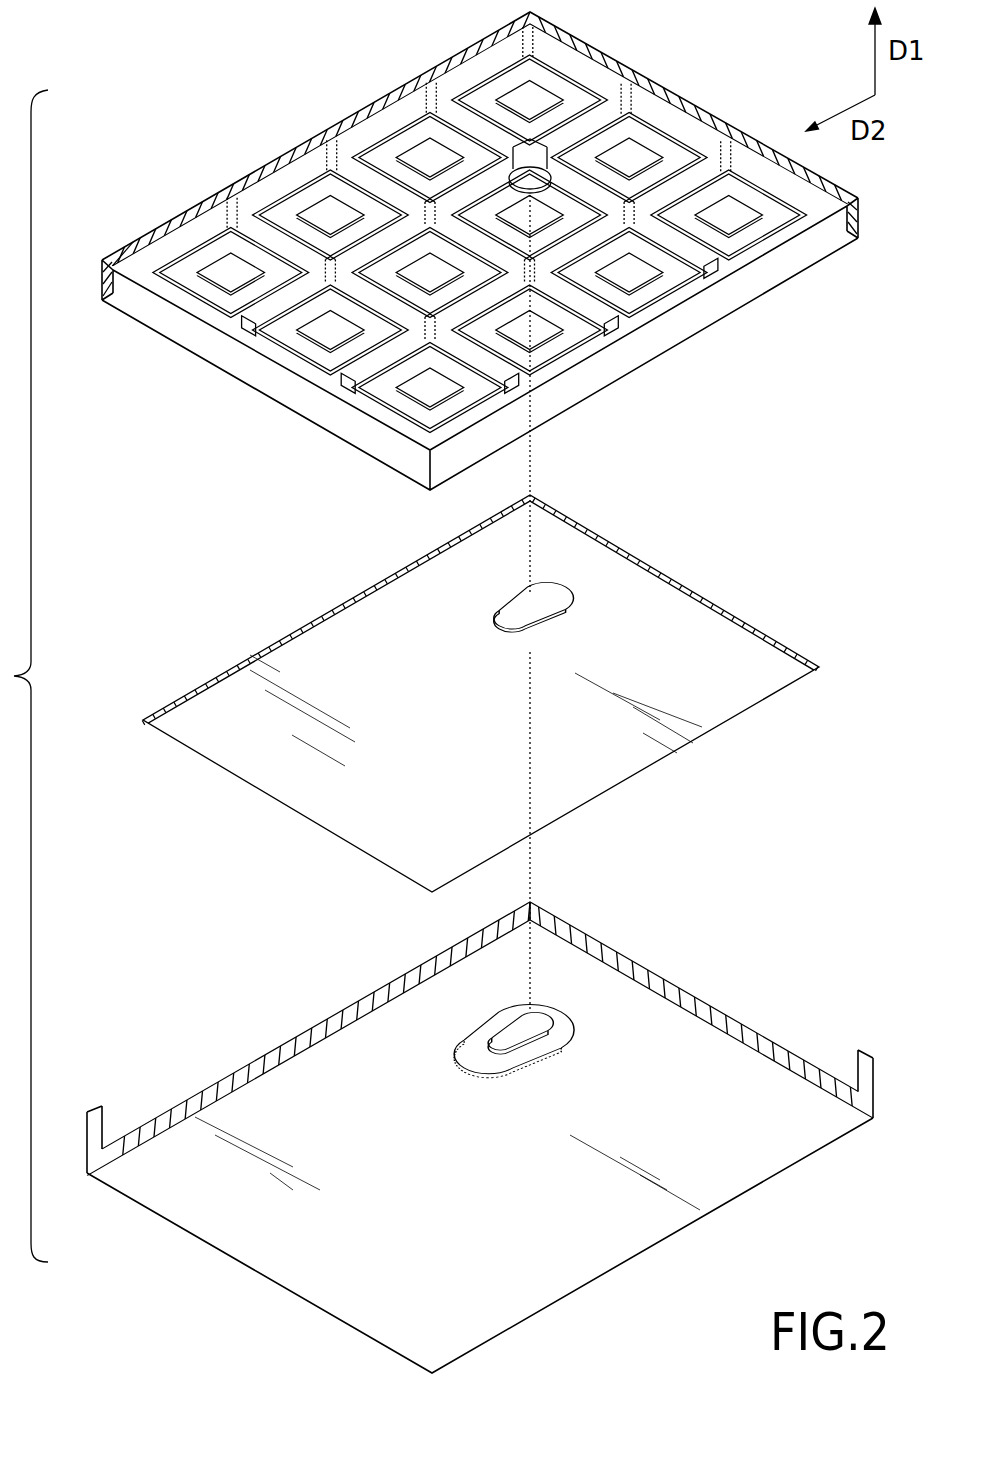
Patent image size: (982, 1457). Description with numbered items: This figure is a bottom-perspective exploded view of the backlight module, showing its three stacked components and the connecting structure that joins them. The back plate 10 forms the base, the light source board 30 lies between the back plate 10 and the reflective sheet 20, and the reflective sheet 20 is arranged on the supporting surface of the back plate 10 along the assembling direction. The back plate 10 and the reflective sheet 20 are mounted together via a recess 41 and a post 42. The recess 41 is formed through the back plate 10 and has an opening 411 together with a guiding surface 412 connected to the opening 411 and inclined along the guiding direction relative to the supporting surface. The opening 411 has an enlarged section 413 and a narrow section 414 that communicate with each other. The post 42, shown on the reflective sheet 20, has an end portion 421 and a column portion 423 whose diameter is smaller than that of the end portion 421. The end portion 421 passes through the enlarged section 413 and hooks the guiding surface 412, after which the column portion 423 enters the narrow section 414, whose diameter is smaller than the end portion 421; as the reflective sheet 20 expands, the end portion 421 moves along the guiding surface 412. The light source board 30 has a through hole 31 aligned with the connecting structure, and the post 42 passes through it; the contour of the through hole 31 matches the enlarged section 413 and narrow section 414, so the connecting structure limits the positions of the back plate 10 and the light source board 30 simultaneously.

The back plate 10 is at (242, 1057).
The reflective sheet 20 is at (212, 170).
The light source board 30 is at (318, 652).
The through hole 31 is at (544, 613).
The recess 41 is at (442, 1070).
The opening 411 is at (530, 1017).
The guiding surface 412 is at (567, 1027).
The enlarged section 413 is at (542, 1030).
The narrow section 414 is at (502, 1057).
The post 42 is at (512, 142).
The end portion 421 is at (514, 183).
The column portion 423 is at (542, 144).